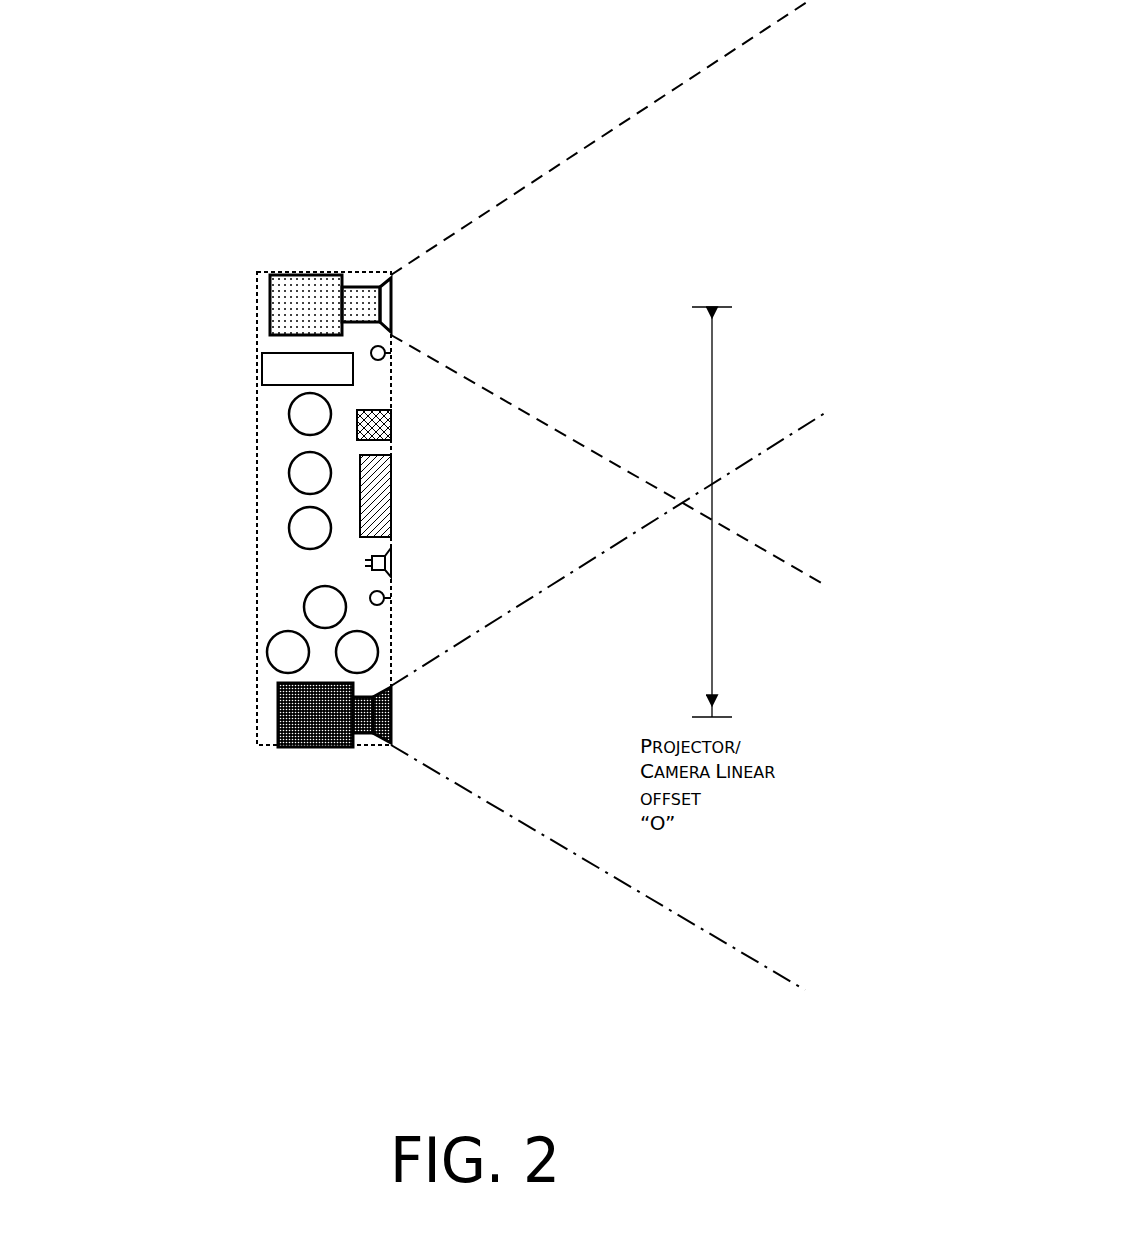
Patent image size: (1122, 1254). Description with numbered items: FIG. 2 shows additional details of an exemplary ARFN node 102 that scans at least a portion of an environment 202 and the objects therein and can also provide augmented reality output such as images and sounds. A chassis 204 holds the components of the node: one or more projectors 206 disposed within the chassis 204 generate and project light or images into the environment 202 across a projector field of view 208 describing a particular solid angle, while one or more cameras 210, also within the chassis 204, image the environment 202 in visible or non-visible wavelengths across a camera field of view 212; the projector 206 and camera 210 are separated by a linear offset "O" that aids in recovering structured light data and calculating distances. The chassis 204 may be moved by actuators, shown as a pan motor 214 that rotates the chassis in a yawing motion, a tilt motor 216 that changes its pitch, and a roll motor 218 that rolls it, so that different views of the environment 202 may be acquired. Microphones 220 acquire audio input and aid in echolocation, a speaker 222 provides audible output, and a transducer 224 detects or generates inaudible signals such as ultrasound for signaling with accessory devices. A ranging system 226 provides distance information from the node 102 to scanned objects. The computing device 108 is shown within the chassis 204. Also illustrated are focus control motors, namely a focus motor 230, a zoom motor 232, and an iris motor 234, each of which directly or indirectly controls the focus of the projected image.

The ARFN node 102 is at (292, 272).
The computing device 108 is at (282, 363).
The environment 202 is at (826, 510).
The chassis 204 is at (328, 272).
The projector 206 is at (305, 302).
The projector field of view 208 is at (606, 131).
The camera 210 is at (312, 718).
The camera field of view 212 is at (556, 842).
The pan motor 214 is at (289, 413).
The tilt motor 216 is at (289, 473).
The roll motor 218 is at (289, 528).
The microphone 220 is at (386, 350).
The speaker 222 is at (393, 563).
The transducer 224 is at (372, 428).
The ranging system 226 is at (383, 488).
The focus motor 230 is at (304, 607).
The zoom motor 232 is at (272, 664).
The iris motor 234 is at (377, 659).